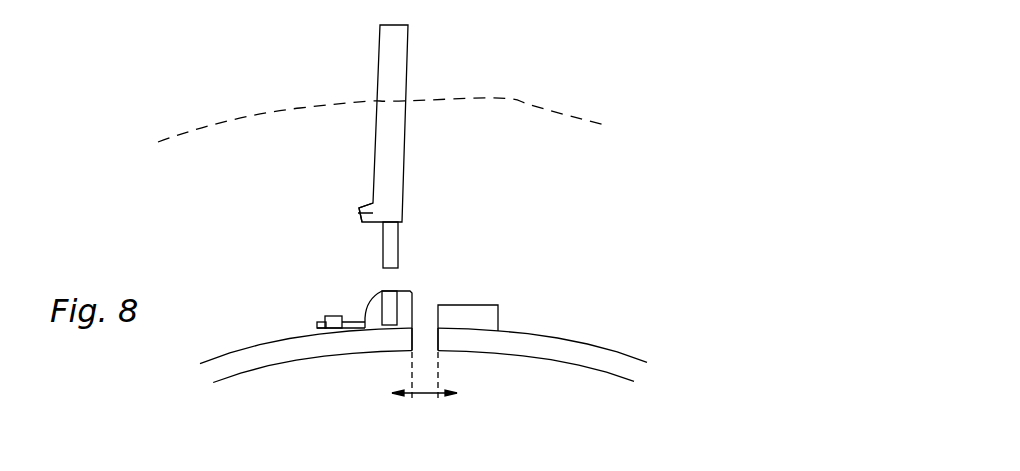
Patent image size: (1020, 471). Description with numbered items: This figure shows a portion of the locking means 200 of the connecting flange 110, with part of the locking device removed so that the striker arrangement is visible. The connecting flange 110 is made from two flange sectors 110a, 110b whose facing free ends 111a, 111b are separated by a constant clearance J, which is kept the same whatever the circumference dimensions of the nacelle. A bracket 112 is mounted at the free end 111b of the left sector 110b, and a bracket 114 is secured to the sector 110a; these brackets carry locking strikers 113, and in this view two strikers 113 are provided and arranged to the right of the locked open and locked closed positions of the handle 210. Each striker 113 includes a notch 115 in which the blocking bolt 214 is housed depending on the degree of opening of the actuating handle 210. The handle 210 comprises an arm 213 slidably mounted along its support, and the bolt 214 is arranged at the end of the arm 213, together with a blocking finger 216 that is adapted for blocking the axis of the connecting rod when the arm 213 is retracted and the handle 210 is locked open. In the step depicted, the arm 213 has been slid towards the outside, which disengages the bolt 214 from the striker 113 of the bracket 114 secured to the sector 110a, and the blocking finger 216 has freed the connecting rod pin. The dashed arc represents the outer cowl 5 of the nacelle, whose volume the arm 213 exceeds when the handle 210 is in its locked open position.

The outer cowl 5 is at (232, 122).
The locking means 200 is at (304, 240).
The actuating handle 210 is at (341, 164).
The arm 213 is at (390, 63).
The blocking bolt 214 is at (394, 244).
The blocking finger 216 is at (356, 212).
The connecting flange 110 is at (620, 339).
The second flange sector 110a is at (610, 388).
The first flange sector 110b is at (242, 377).
The free end of second sector 111a is at (442, 353).
The free end of first sector 111b is at (403, 353).
The bracket 112 is at (365, 333).
The locking striker 113 is at (368, 302).
The bracket 114 is at (488, 315).
The notch 115 is at (393, 290).
The clearance J is at (424, 387).